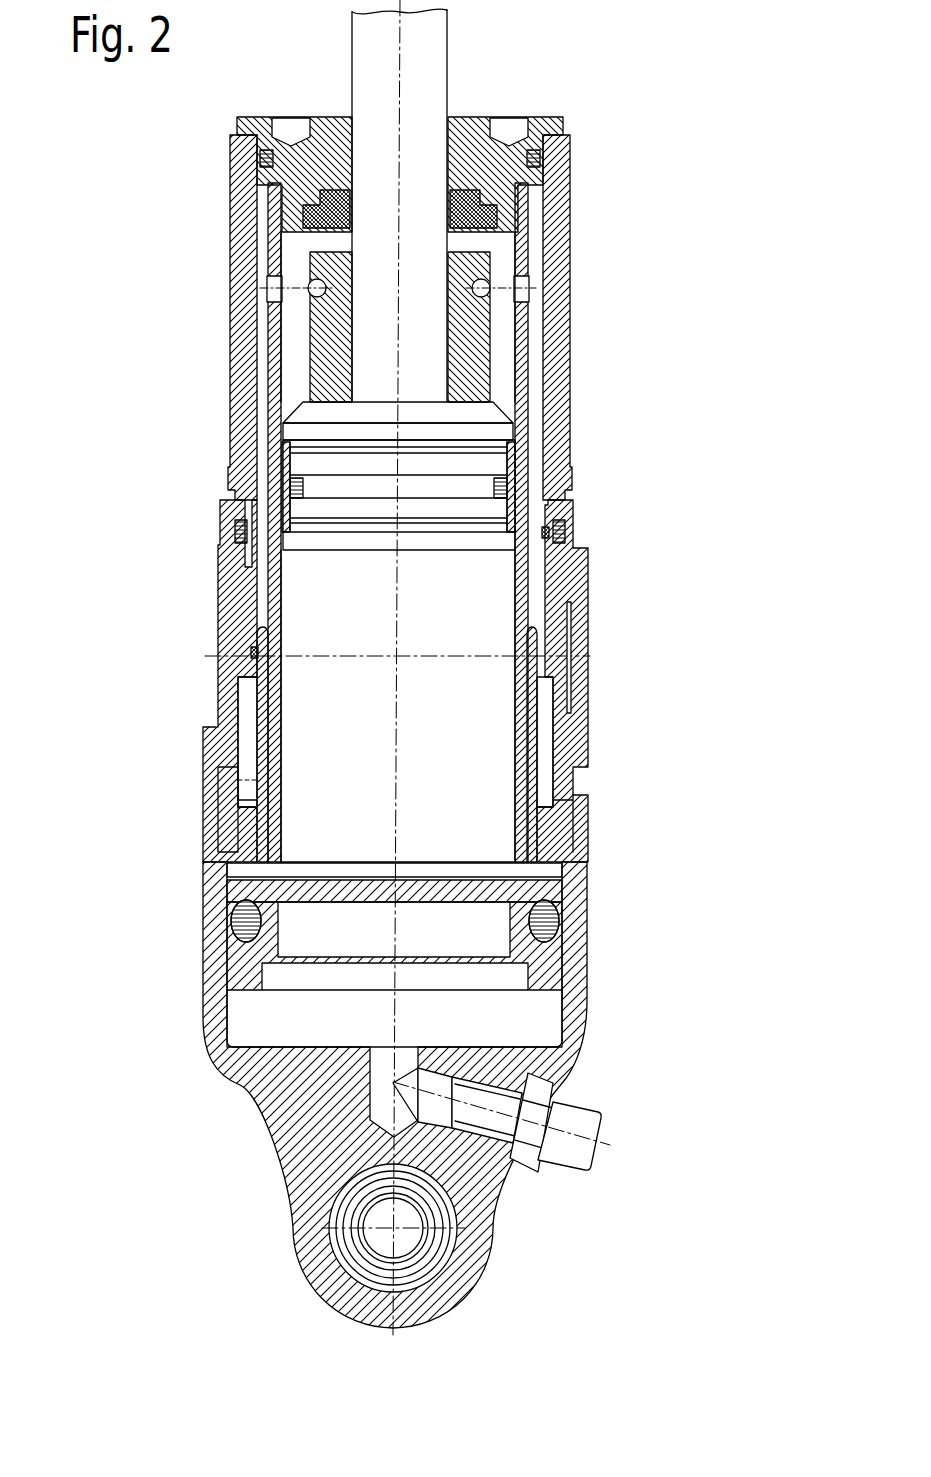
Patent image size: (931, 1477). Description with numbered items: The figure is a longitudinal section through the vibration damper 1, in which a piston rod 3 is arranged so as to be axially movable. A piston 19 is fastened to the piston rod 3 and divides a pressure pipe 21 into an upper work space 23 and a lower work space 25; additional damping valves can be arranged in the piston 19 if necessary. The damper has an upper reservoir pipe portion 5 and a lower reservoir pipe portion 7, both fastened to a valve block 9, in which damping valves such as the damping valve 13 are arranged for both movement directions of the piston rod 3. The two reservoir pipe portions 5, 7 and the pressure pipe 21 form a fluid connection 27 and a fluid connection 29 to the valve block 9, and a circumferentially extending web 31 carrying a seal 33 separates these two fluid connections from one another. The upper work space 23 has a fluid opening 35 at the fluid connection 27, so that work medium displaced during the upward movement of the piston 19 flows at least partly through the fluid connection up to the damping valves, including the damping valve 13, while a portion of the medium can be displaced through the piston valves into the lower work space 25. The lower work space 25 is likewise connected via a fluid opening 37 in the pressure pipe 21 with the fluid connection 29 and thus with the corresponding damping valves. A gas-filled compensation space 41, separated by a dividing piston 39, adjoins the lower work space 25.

The vibration damper 1 is at (102, 1173).
The piston rod 3 is at (428, 85).
The upper reservoir pipe portion 5 is at (248, 227).
The lower reservoir pipe portion 7 is at (213, 924).
The valve block 9 is at (215, 737).
The damping valve 13 is at (573, 1010).
The piston 19 is at (318, 463).
The pressure pipe 21 is at (527, 262).
The upper work space 23 is at (295, 333).
The lower work space 25 is at (328, 637).
The fluid connection 27 is at (262, 385).
The fluid connection 29 is at (248, 752).
The web 31 is at (240, 533).
The seal 33 is at (254, 650).
The fluid opening 35 is at (525, 298).
The fluid opening 37 is at (245, 832).
The dividing piston 39 is at (540, 892).
The compensation space 41 is at (256, 1013).